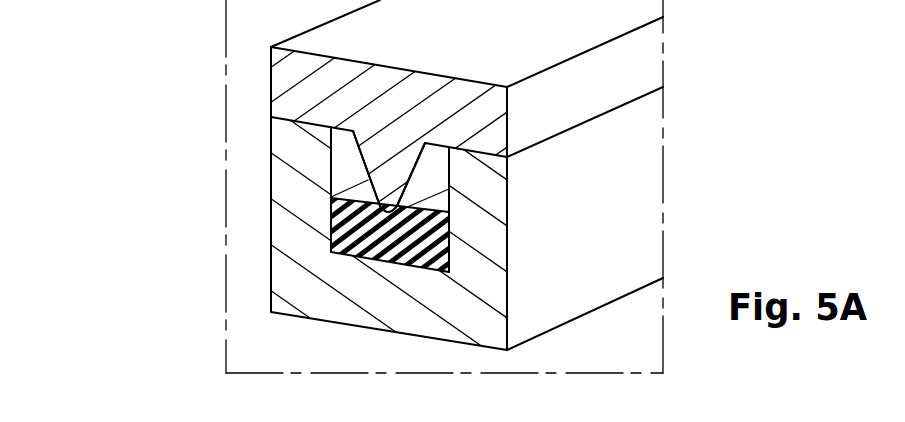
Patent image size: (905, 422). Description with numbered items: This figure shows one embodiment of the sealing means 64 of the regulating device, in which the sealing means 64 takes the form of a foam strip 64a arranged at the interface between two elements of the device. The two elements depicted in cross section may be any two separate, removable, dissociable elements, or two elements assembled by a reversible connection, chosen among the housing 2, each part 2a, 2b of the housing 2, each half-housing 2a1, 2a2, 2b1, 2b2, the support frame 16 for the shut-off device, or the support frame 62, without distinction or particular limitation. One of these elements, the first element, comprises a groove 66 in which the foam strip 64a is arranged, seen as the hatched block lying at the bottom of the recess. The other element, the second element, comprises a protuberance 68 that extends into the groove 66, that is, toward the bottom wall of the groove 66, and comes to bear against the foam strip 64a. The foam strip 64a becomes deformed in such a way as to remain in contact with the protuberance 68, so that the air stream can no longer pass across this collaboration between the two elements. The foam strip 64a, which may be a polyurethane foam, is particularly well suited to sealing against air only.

The housing 2 is at (451, 211).
The part of the housing 2a is at (451, 211).
The part of the housing 2b is at (451, 211).
The half-housing 2a1 is at (451, 211).
The half-housing 2a2 is at (451, 211).
The half-housing 2b1 is at (451, 211).
The half-housing 2b2 is at (451, 211).
The support frame 16 is at (451, 211).
The support frame 62 is at (410, 118).
The sealing means 64 is at (292, 232).
The foam strip 64a is at (330, 211).
The groove 66 is at (478, 232).
The protuberance 68 is at (378, 152).